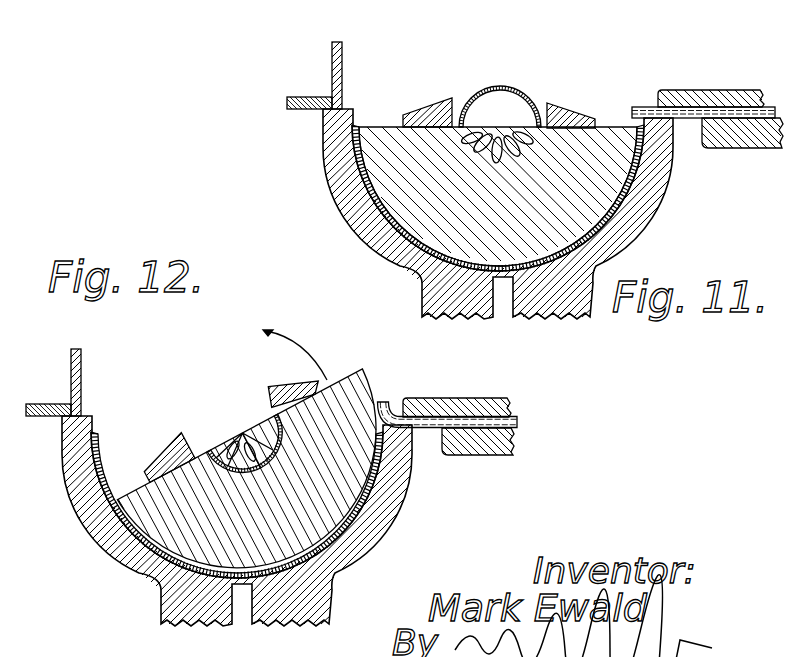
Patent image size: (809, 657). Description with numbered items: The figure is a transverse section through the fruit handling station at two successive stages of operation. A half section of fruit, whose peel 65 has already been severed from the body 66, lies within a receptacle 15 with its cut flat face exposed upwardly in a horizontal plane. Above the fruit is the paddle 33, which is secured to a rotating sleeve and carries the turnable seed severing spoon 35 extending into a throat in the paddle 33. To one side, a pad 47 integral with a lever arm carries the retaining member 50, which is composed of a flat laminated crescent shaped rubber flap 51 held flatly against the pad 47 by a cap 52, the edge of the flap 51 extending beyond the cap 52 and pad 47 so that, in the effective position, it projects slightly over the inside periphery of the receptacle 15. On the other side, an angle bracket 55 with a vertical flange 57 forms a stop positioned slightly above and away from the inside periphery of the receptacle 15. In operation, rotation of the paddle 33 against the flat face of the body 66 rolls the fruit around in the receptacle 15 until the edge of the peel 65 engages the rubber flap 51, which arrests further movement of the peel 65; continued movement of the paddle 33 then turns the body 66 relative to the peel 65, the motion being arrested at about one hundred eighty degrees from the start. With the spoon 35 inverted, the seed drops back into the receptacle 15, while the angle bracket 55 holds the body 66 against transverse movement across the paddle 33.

In FIG. 11, the receptacle 15 is at (343, 226).
In FIG. 12, the receptacle 15 is at (97, 557).
In FIG. 11, the paddle 33 is at (430, 104).
In FIG. 12, the paddle 33 is at (181, 433).
In FIG. 11, the spoon 35 is at (497, 86).
In FIG. 12, the spoon 35 is at (268, 411).
In FIG. 11, the pad 47 is at (752, 148).
In FIG. 12, the pad 47 is at (513, 455).
In FIG. 11, the retaining member 50 is at (704, 98).
In FIG. 12, the retaining member 50 is at (496, 420).
In FIG. 11, the rubber flap 51 is at (637, 107).
In FIG. 12, the rubber flap 51 is at (518, 422).
In FIG. 11, the cap 52 is at (716, 90).
In FIG. 12, the cap 52 is at (461, 398).
In FIG. 11, the angle bracket 55 is at (300, 97).
In FIG. 12, the angle bracket 55 is at (40, 403).
In FIG. 11, the vertical flange 57 is at (343, 47).
In FIG. 12, the vertical flange 57 is at (82, 352).
In FIG. 11, the peel 65 is at (640, 163).
In FIG. 12, the peel 65 is at (107, 458).
In FIG. 11, the body 66 is at (583, 187).
In FIG. 12, the body 66 is at (361, 370).